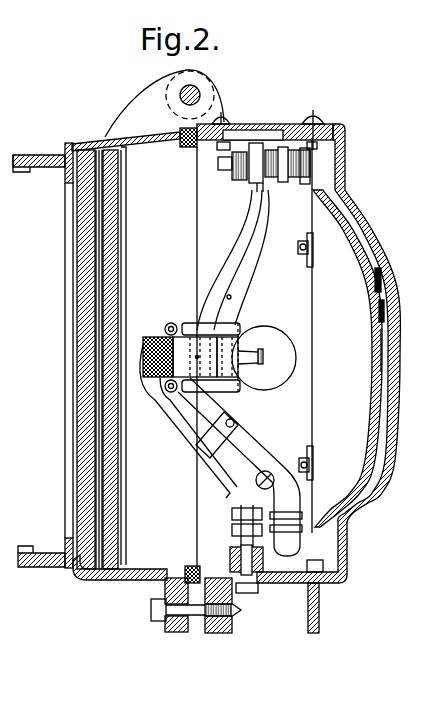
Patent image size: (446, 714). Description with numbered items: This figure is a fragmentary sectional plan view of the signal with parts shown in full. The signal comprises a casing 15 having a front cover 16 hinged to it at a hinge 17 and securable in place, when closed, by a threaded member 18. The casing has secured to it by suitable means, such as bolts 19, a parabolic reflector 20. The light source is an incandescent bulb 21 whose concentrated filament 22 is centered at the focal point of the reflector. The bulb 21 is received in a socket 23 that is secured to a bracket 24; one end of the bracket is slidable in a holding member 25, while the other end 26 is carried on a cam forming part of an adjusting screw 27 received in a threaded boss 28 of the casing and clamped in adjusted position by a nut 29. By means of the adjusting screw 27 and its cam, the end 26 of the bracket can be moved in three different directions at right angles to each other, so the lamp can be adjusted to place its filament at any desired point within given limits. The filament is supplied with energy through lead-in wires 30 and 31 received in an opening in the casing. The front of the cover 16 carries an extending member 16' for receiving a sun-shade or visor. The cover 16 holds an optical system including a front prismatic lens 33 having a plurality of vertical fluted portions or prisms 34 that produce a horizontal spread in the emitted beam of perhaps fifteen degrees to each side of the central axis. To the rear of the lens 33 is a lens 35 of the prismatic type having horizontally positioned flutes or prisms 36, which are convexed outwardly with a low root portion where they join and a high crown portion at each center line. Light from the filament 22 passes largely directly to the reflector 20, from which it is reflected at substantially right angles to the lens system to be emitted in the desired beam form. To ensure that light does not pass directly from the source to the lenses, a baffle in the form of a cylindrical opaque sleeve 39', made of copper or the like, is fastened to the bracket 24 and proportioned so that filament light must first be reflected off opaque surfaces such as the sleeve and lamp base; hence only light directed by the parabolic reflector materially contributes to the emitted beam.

The casing 15 is at (295, 583).
The front cover 16 is at (120, 581).
The extending member 16' is at (39, 375).
The hinge 17 is at (200, 90).
The threaded member 18 is at (153, 615).
The bolts 19 is at (303, 243).
The parabolic reflector 20 is at (368, 273).
The incandescent bulb 21 is at (298, 340).
The filament 22 is at (262, 360).
The socket 23 is at (150, 333).
The bracket 24 is at (200, 270).
The holding member 25 is at (302, 532).
The end of bracket 26 is at (258, 168).
The adjusting screw 27 is at (234, 170).
The threaded boss 28 is at (302, 160).
The nut 29 is at (290, 170).
The lead-in wire 30 is at (182, 432).
The lead-in wire 31 is at (282, 472).
The front prismatic lens 33 is at (84, 457).
The vertical fluted portions 34 is at (88, 506).
The rear prismatic lens 35 is at (100, 418).
The horizontal flutes 36 is at (100, 222).
The cylindrical opaque sleeve 39' is at (222, 347).